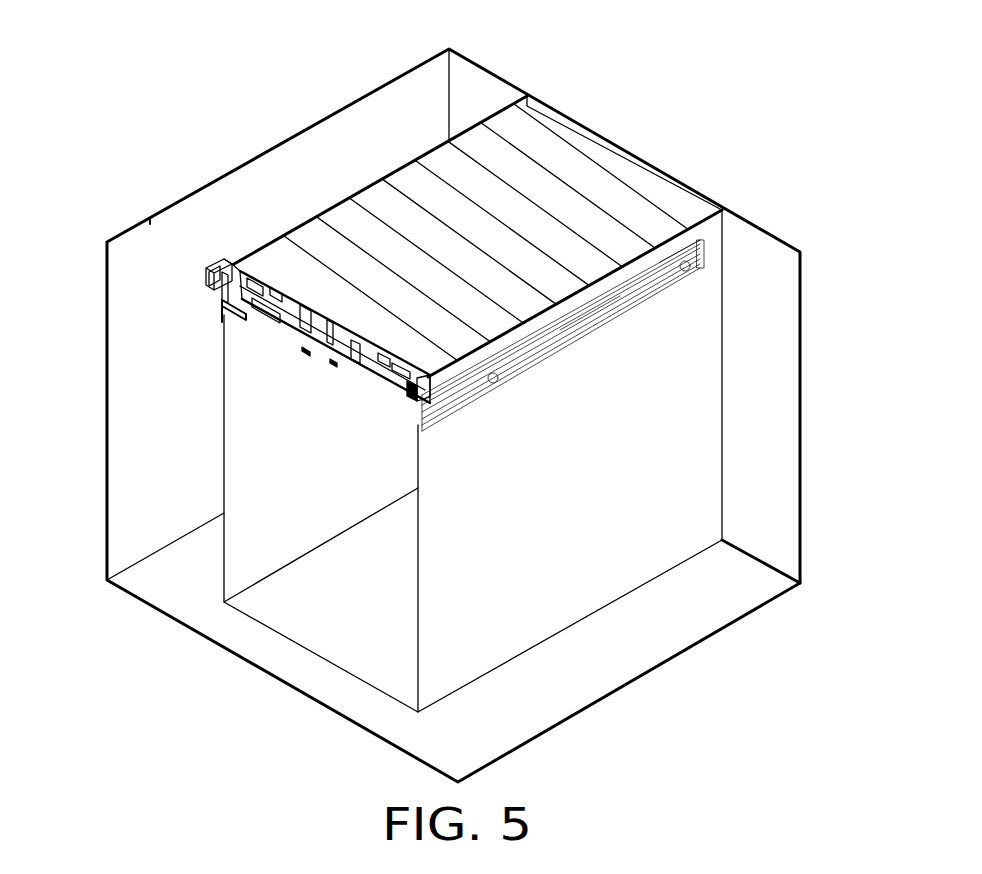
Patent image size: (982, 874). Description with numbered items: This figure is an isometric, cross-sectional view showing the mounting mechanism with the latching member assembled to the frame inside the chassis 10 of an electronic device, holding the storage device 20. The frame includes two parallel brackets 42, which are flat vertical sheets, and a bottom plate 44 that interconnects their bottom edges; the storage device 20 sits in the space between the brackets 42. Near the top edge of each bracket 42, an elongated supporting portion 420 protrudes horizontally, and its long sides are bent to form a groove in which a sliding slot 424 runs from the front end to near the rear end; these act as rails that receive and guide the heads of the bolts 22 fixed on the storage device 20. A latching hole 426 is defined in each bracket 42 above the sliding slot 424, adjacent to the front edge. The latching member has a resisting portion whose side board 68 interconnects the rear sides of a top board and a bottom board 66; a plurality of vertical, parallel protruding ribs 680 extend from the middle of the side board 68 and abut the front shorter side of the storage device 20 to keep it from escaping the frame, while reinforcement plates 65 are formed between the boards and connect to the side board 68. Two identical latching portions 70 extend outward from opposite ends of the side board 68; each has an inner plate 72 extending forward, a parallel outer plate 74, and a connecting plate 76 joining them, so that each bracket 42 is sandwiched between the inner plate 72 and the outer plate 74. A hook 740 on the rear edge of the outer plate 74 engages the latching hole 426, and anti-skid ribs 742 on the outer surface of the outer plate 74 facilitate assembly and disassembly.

The chassis 10 is at (480, 92).
The storage device 20 is at (593, 178).
The bolt 22 is at (688, 270).
The bracket 42 is at (392, 160).
The bottom plate 44 is at (342, 625).
The reinforcement plate 65 is at (352, 342).
The bottom board 66 is at (320, 345).
The side board 68 is at (345, 310).
The protruding rib 680 is at (313, 302).
The latching portion 70 is at (432, 390).
The inner plate 72 is at (222, 298).
The outer plate 74 is at (222, 262).
The connecting plate 76 is at (222, 283).
The supporting portion 420 is at (701, 253).
The sliding slot 424 is at (590, 323).
The latching hole 426 is at (227, 260).
The hook 740 is at (224, 262).
The anti-skid rib 742 is at (213, 270).